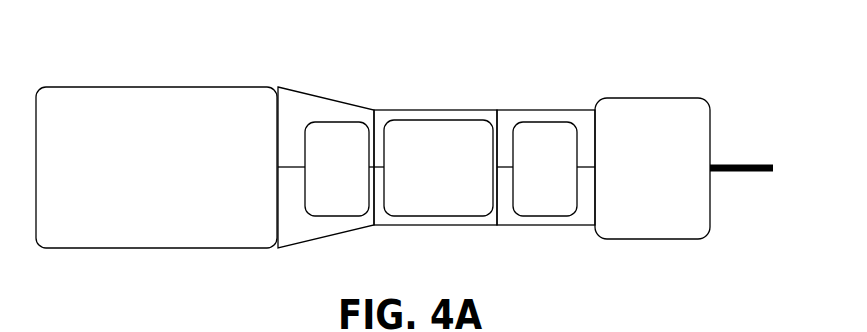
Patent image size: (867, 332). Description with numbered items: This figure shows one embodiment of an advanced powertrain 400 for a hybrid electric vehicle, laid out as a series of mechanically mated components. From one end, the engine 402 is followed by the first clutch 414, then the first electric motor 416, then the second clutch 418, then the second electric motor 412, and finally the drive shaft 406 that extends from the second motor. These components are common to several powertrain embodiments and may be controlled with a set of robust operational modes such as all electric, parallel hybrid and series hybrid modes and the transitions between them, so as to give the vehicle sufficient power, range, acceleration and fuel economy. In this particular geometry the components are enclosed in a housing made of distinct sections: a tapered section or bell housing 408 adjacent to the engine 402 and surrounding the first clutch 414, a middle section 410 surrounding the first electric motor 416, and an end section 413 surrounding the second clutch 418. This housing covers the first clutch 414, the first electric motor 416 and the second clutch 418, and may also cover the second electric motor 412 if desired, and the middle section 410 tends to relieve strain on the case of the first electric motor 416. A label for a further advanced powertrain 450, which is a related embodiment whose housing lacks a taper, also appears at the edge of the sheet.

The advanced powertrain 400 is at (102, 48).
The engine 402 is at (165, 87).
The drive shaft 406 is at (745, 160).
The tapered section and/or bell housing 408 is at (317, 92).
The middle section 410 is at (428, 110).
The electric motor M2 412 is at (650, 98).
The end section 413 is at (532, 110).
The clutch 1 414 is at (360, 217).
The electric motor M1 416 is at (470, 217).
The clutch 2 418 is at (547, 217).
The advanced powertrain 450 is at (57, 331).